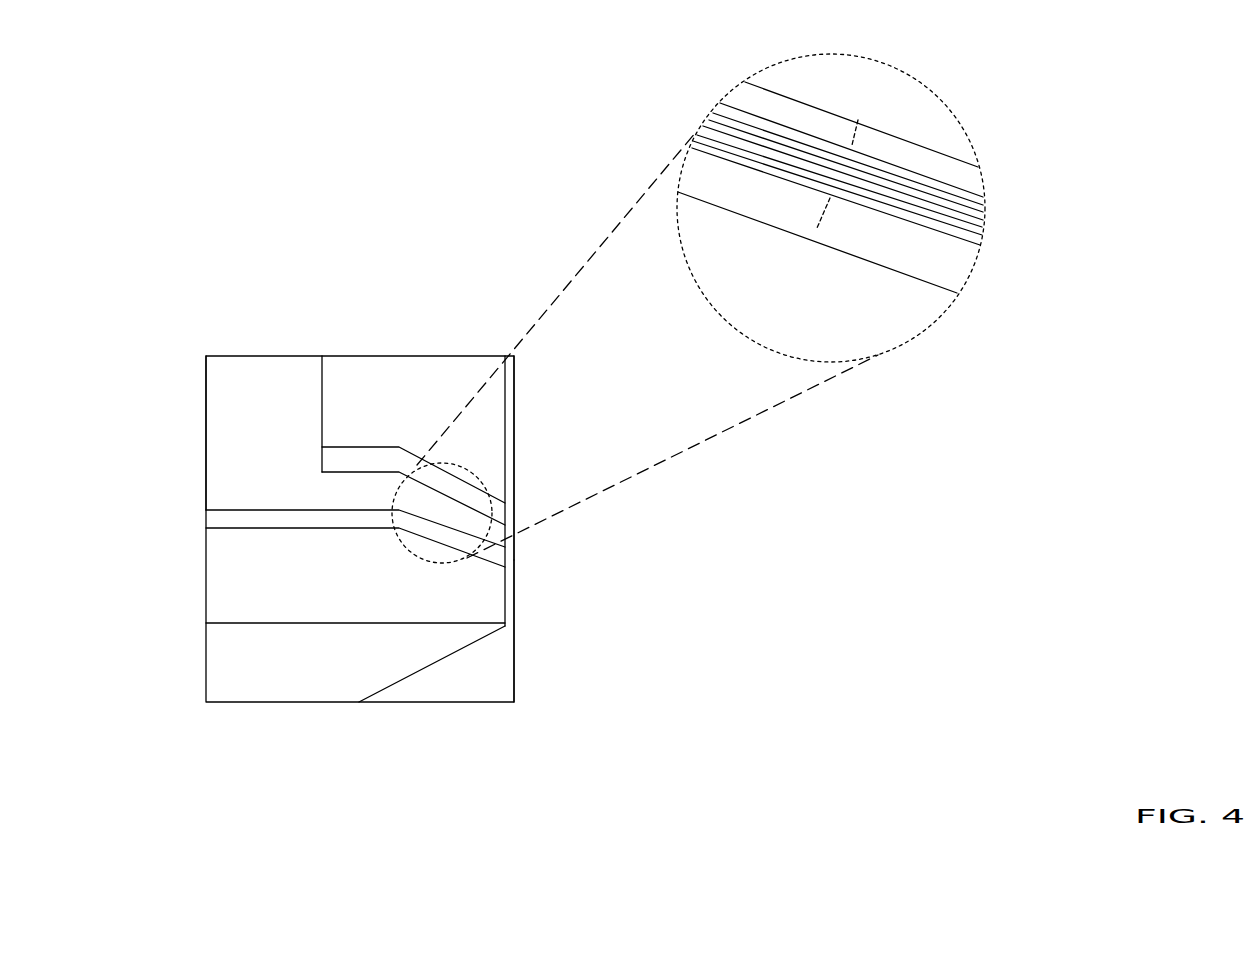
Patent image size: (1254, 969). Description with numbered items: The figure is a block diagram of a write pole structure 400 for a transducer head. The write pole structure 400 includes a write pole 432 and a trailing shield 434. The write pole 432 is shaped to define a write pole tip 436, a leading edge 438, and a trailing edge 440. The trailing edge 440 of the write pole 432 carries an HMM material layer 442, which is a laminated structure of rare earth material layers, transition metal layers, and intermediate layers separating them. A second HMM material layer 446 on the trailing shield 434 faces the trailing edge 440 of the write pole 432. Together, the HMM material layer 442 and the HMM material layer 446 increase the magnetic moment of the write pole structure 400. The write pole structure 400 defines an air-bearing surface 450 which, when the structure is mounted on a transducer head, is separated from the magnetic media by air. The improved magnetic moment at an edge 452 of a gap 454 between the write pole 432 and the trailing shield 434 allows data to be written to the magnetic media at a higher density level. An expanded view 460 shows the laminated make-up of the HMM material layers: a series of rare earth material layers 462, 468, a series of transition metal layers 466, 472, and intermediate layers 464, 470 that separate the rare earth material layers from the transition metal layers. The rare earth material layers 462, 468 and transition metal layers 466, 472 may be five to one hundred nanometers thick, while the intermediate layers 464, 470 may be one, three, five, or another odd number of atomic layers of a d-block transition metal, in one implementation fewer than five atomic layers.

The write pole structure 400 is at (222, 91).
The write pole 432 is at (206, 586).
The trailing shield 434 is at (358, 386).
The write pole tip 436 is at (507, 611).
The leading edge 438 is at (453, 655).
The trailing edge 440 is at (505, 548).
The HMM material layer 442 is at (206, 512).
The HMM material layer 446 is at (507, 523).
The air-bearing surface 450 is at (517, 382).
The edge 452 is at (512, 538).
The gap 454 is at (309, 478).
The expanded view 460 is at (944, 315).
The rare earth material layer 462 is at (985, 200).
The intermediate layer 464 is at (985, 211).
The transition metal layer 466 is at (985, 222).
The rare earth material layer 468 is at (985, 230).
The intermediate layer 470 is at (983, 237).
The transition metal layer 472 is at (980, 245).